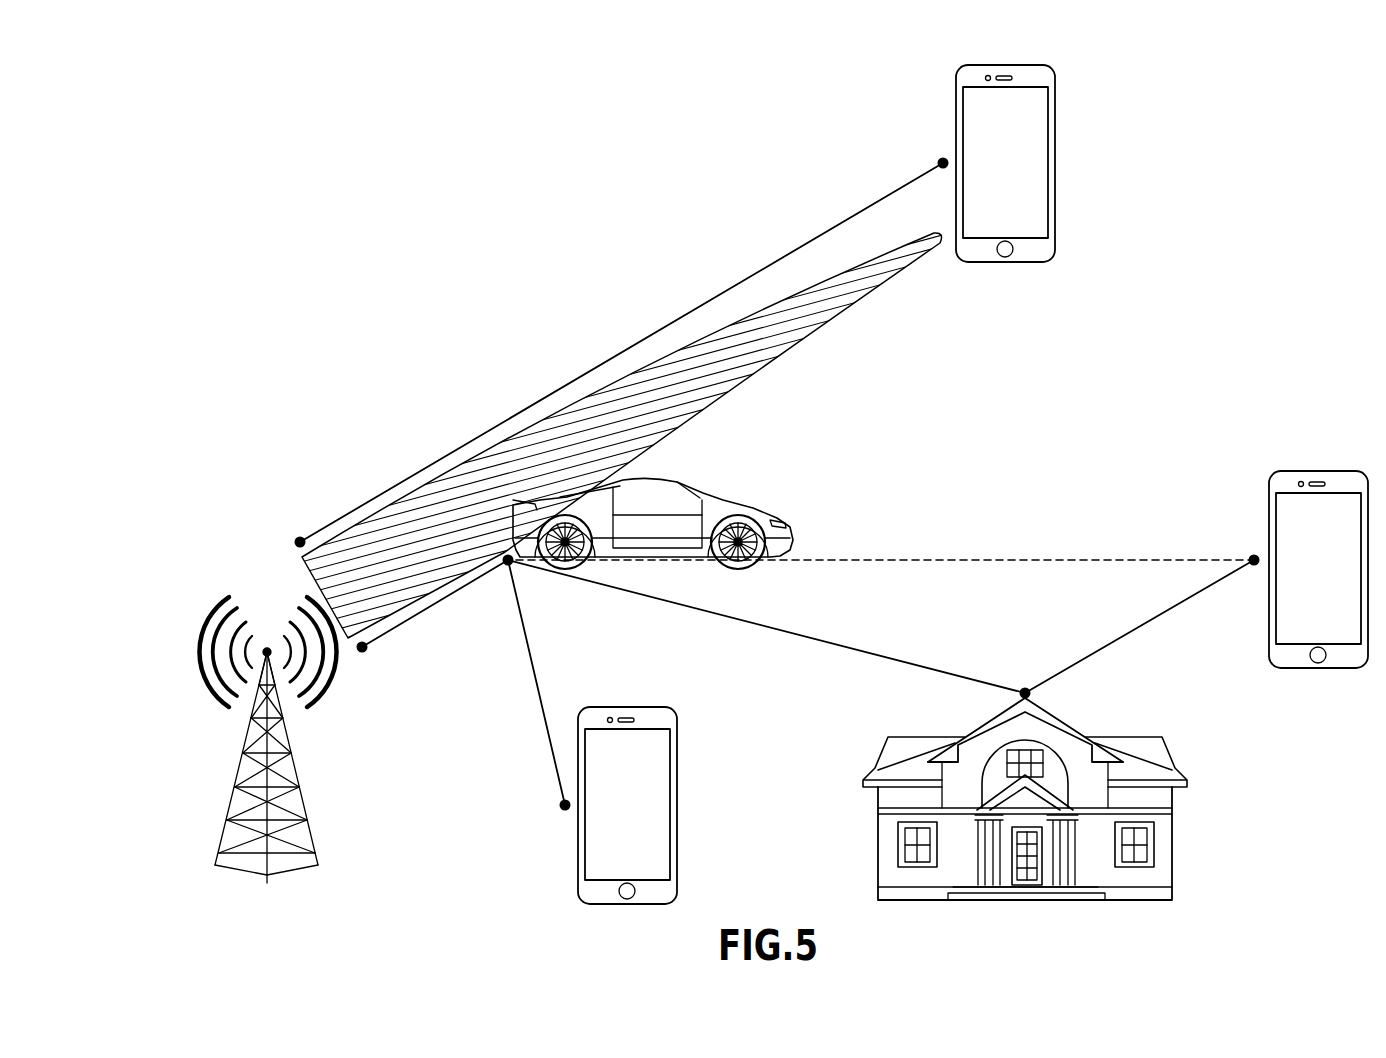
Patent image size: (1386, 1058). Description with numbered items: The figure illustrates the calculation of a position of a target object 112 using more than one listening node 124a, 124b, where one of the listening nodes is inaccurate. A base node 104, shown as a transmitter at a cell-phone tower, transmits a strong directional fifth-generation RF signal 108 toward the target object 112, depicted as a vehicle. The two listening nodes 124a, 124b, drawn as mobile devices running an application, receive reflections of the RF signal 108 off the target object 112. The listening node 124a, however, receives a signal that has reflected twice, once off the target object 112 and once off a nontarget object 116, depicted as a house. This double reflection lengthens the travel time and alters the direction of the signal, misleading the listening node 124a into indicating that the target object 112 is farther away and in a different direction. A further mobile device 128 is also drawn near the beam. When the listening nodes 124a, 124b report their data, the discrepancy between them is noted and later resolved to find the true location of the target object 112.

The base node 104 is at (205, 590).
The 5G RF signal 108 is at (602, 382).
The target object 112 is at (722, 500).
The nontarget object 116 is at (1124, 736).
The listening node 124a is at (1276, 476).
The listening node 124b is at (671, 712).
The mobile device 128 is at (962, 72).